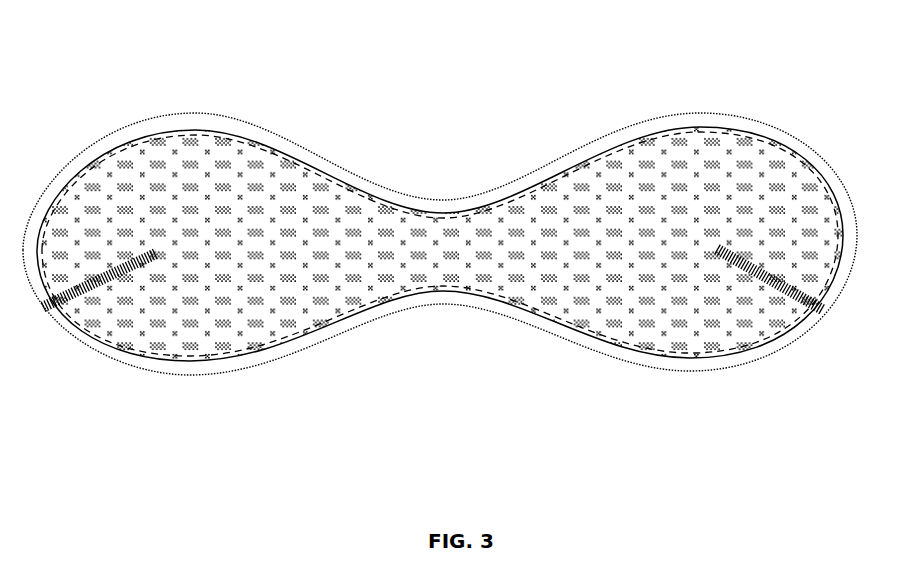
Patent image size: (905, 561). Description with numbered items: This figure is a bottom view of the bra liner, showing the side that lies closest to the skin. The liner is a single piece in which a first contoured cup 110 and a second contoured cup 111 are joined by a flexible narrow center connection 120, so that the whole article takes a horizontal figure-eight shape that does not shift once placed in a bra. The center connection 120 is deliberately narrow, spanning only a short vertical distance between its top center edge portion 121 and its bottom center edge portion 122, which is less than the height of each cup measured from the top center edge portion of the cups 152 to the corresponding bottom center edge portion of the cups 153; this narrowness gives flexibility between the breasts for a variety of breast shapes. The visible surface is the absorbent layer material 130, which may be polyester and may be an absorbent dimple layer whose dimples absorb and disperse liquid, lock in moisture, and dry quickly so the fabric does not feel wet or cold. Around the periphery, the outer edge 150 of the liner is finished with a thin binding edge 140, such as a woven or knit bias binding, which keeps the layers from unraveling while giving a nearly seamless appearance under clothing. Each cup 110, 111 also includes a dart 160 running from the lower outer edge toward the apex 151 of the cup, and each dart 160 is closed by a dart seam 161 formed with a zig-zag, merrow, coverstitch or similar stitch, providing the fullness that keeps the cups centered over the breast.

The first contoured cup 110 is at (177, 222).
The second contoured cup 111 is at (690, 231).
The flexible narrow center connection 120 is at (427, 238).
The top center edge portion of the flexible narrow center connection 121 is at (442, 217).
The bottom center edge portion of the flexible narrow center connection 122 is at (442, 288).
The absorbent layer material 130 is at (260, 303).
The binding edge 140 is at (855, 237).
The outer edge 150 is at (57, 190).
The apex 151 is at (158, 254).
The top center edge portion of the first and second contoured cups 152 is at (168, 131).
The bottom center edge portion of the first and second contoured cups 153 is at (176, 358).
The dart 160 is at (117, 273).
The dart seam 161 is at (98, 279).